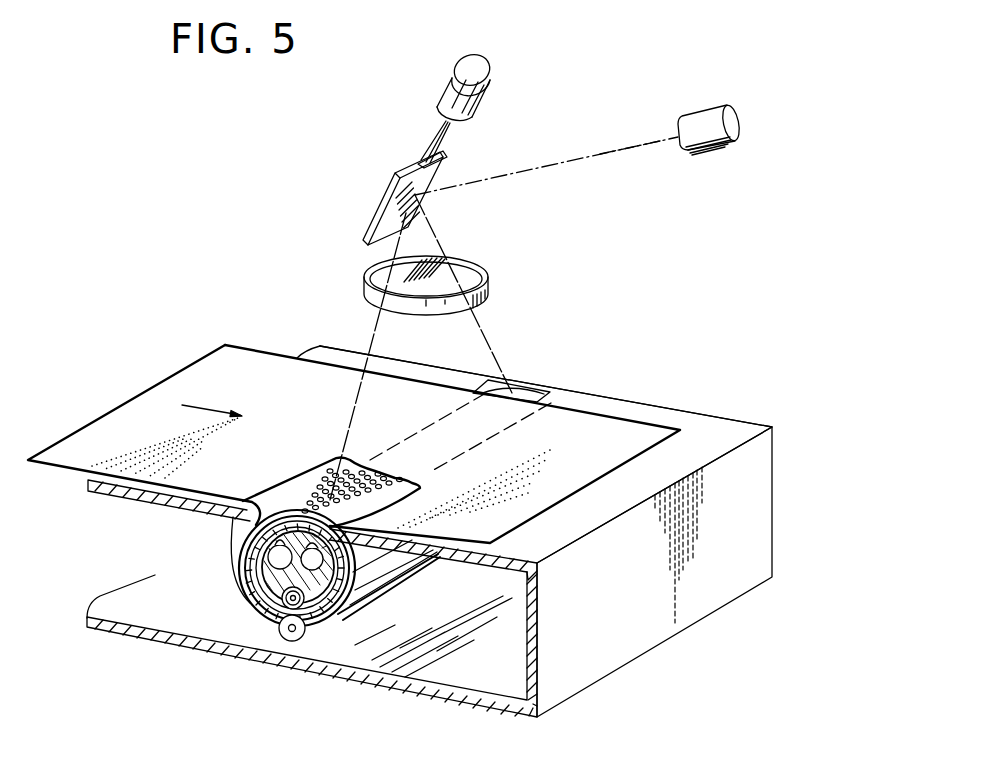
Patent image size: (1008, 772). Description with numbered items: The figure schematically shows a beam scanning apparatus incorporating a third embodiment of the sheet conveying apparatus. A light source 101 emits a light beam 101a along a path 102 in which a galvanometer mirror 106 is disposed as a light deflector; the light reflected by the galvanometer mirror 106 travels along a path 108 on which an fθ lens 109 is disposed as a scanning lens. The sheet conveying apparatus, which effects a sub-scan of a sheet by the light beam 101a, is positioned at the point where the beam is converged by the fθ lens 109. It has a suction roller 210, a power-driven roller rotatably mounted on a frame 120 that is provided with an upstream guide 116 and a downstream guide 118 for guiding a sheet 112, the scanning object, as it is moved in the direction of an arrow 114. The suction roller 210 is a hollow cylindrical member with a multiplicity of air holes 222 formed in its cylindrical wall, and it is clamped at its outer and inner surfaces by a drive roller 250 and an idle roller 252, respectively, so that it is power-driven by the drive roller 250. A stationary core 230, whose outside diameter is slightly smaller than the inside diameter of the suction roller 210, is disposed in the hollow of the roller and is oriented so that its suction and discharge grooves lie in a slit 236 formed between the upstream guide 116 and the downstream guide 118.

The light source 101 is at (712, 156).
The light beam 101a is at (645, 146).
The path of light beam 102 is at (592, 157).
The galvanometer mirror 106 is at (385, 205).
The path of reflected light 108 is at (373, 343).
The fθ lens 109 is at (488, 274).
The sheet 112 is at (200, 370).
The arrow 114 is at (218, 410).
The upstream guide 116 is at (175, 494).
The downstream guide 118 is at (563, 538).
The frame 120 is at (562, 706).
The suction roller 210 is at (343, 602).
The air holes 222 is at (330, 497).
The stationary core 230 is at (282, 600).
The slit 236 is at (533, 396).
The drive roller 250 is at (290, 641).
The idle roller 252 is at (267, 612).